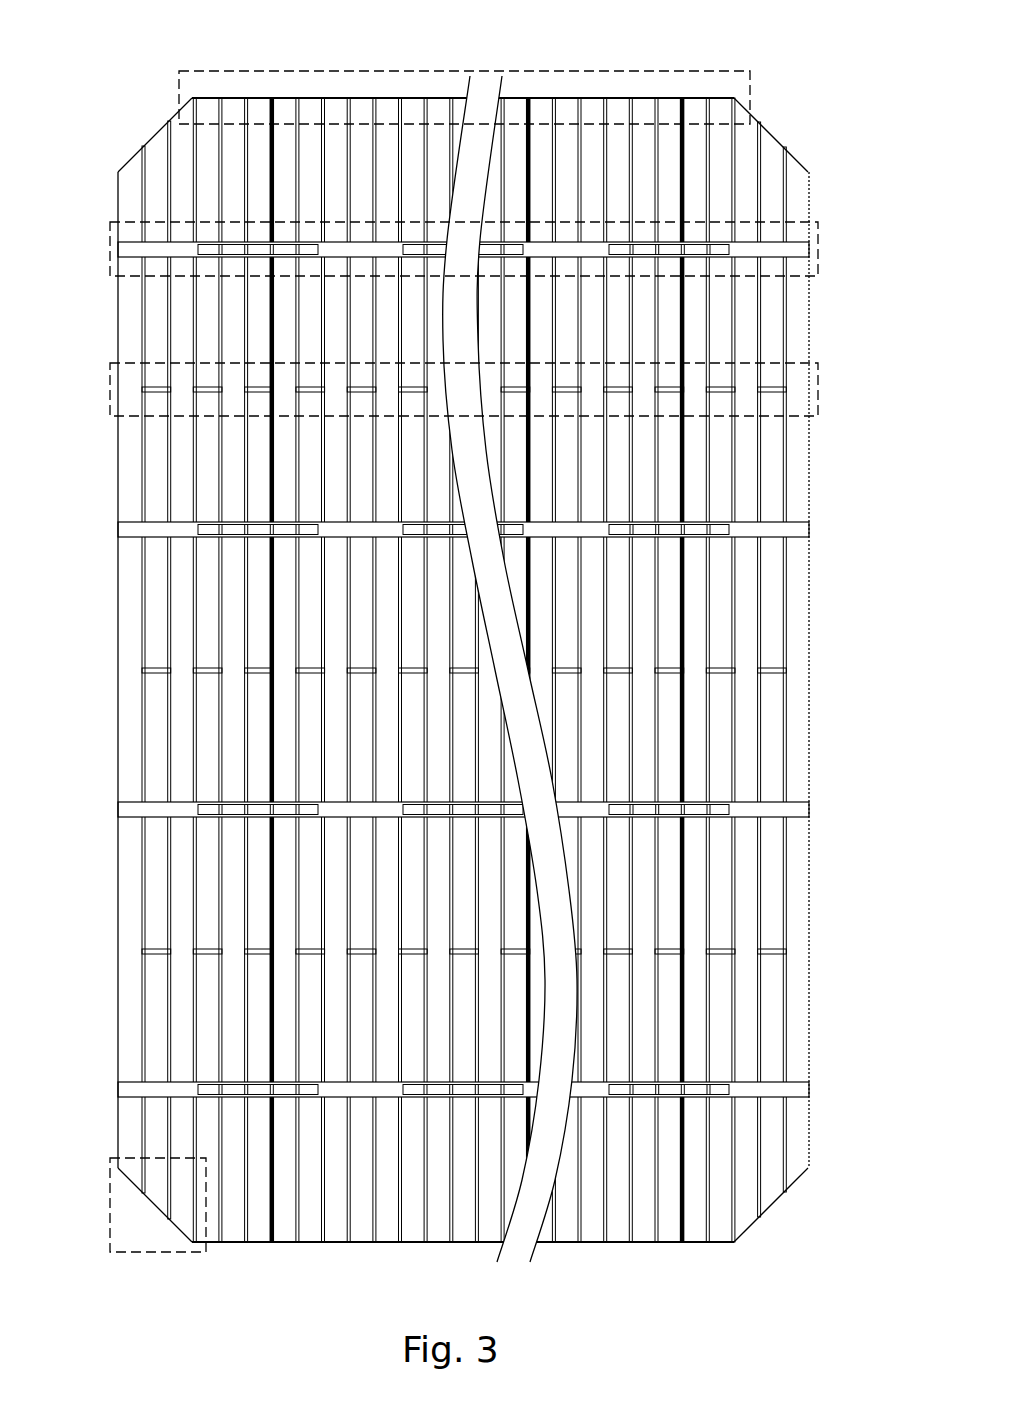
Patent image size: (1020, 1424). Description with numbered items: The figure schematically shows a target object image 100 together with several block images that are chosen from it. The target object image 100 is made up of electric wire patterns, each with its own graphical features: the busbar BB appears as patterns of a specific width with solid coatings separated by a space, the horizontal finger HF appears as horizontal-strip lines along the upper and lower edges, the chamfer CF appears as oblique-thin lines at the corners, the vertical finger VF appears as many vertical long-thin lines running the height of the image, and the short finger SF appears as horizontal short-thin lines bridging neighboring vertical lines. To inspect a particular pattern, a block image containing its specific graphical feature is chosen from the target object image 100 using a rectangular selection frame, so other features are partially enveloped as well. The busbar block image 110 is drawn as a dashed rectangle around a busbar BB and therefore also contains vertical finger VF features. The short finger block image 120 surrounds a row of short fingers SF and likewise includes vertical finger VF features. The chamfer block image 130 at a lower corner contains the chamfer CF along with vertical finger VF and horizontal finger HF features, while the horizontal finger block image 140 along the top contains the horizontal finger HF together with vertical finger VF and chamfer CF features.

The target object image 100 is at (802, 60).
The busbar block image 110 is at (818, 244).
The short finger block image 120 is at (818, 384).
The chamfer block image 130 is at (108, 1215).
The horizontal finger block image 140 is at (690, 70).
The horizontal finger HF is at (235, 97).
The vertical finger VF is at (322, 110).
The busbar BB is at (140, 250).
The short finger SF is at (145, 390).
The chamfer CF is at (770, 130).